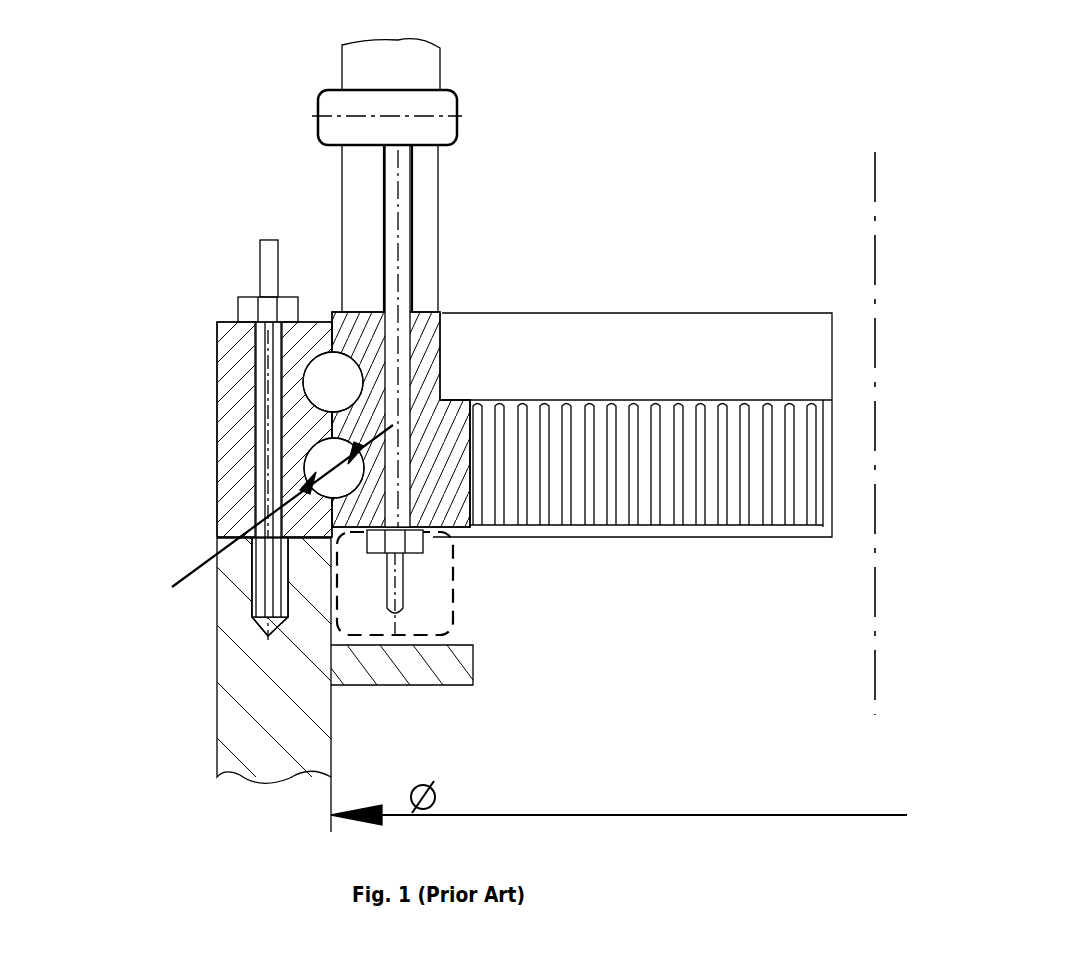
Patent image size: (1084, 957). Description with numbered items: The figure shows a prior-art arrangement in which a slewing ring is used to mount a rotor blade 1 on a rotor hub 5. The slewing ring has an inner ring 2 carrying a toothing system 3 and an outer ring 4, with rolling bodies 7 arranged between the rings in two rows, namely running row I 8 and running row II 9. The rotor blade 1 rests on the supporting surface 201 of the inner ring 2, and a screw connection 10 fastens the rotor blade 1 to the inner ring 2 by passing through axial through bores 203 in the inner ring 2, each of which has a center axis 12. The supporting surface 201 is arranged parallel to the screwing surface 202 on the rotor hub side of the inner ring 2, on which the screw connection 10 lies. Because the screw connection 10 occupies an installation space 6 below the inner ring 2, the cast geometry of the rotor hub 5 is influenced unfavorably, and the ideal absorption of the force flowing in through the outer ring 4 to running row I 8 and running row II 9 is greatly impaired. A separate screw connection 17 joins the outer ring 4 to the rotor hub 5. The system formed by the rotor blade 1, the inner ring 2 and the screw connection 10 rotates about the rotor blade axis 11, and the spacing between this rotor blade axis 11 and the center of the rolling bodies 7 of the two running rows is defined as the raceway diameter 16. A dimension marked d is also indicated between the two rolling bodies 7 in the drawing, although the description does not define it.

The rotor blade 1 is at (427, 222).
The inner ring 2 is at (533, 330).
The toothing system 3 is at (540, 470).
The outer ring 4 is at (223, 343).
The rotor hub 5 is at (330, 698).
The installation space 6 is at (437, 590).
The rolling bodies 7 is at (317, 392).
The running row I 8 is at (313, 460).
The running row II 9 is at (310, 380).
The screw connection 10 is at (330, 698).
The rotor blade axis 11 is at (873, 253).
The center axis 12 is at (397, 617).
The raceway diameter 16 is at (619, 803).
The screw connection 17 is at (263, 285).
The supporting surface 201 is at (433, 303).
The screwing surface 202 is at (467, 530).
The axial through bores 203 is at (365, 330).
The distance d is at (282, 506).